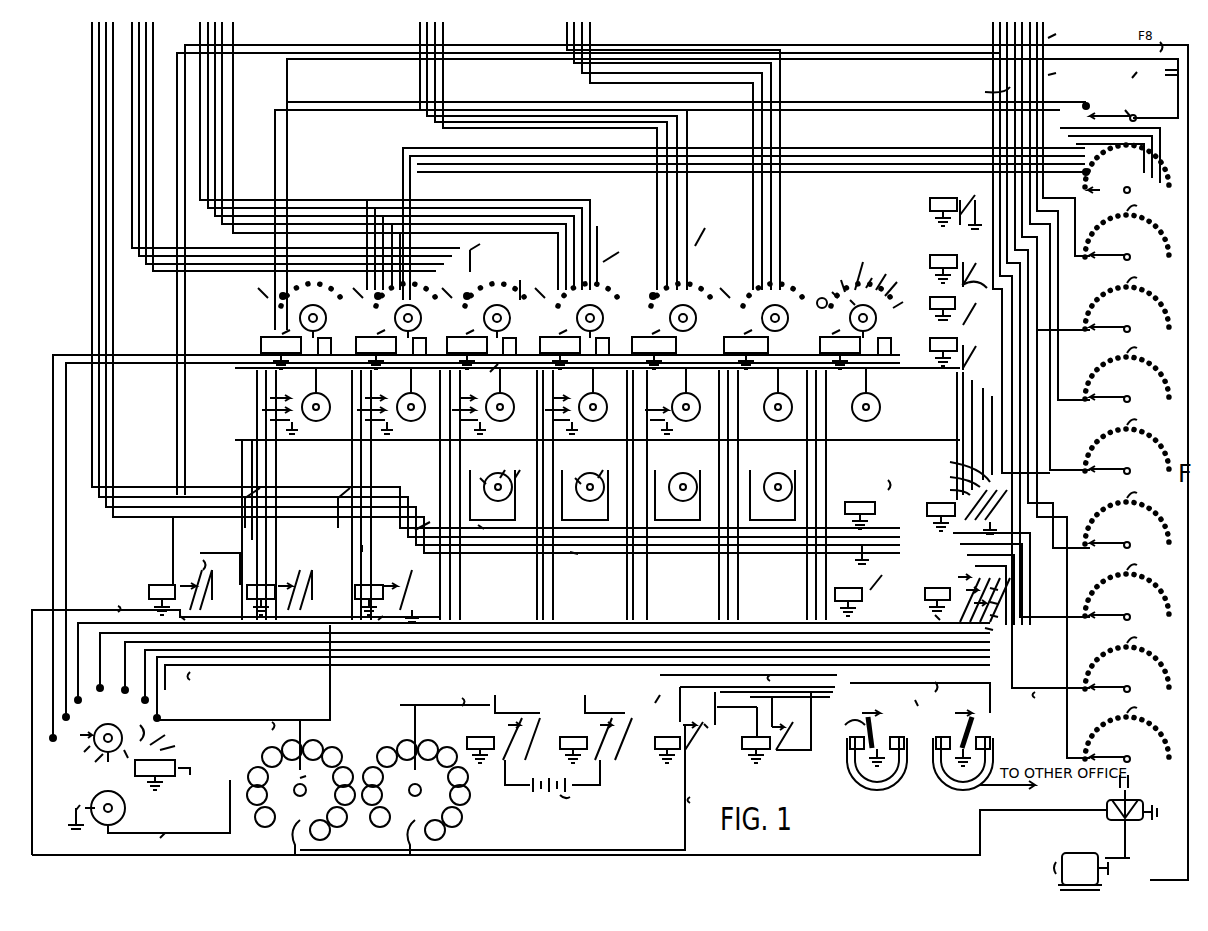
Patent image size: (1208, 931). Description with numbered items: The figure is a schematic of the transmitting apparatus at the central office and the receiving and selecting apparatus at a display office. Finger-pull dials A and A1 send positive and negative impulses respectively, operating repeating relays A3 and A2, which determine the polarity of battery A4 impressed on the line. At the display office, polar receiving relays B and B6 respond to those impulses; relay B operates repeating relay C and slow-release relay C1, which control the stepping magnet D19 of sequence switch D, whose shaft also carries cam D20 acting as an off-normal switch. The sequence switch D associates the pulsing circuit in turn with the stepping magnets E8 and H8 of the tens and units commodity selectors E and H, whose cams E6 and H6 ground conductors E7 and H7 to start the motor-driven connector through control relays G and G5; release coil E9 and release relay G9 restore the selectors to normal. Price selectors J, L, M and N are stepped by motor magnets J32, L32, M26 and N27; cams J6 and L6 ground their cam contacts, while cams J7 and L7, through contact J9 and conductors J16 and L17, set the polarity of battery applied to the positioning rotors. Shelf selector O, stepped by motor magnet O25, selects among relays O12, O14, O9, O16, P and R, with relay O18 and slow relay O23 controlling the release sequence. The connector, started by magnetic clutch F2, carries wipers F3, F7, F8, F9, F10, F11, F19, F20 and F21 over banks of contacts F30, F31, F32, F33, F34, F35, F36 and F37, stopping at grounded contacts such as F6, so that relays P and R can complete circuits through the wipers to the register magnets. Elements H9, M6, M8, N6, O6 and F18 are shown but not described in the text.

The tens commodity selector E is at (292, 307).
The units commodity selector H is at (388, 307).
The fraction price selector J is at (478, 307).
The units price selector L is at (571, 307).
The tens price selector M is at (683, 279).
The hundreds price selector N is at (757, 307).
The shelf selector switch O is at (850, 307).
The stepping magnet E8 is at (281, 353).
The release coil E9 is at (322, 348).
The cam E6 is at (318, 401).
The conductor E7 is at (261, 494).
The stepping magnet H8 is at (376, 353).
The relay H9 is at (417, 348).
The cam H6 is at (413, 401).
The conductor H7 is at (350, 494).
The motor magnet J32 is at (467, 353).
The contact J9 is at (506, 343).
The cam J6 is at (502, 401).
The cam J7 is at (492, 495).
The conductor J16 is at (413, 507).
The motor magnet L32 is at (560, 353).
The cam L6 is at (595, 401).
The cam L7 is at (585, 495).
The conductor L17 is at (580, 550).
The motor magnet M26 is at (654, 353).
The stepping magnet M6 is at (690, 401).
The relay M8 is at (674, 495).
The motor magnet N27 is at (746, 353).
The stepping magnet N6 is at (781, 401).
The motor magnet O25 is at (840, 353).
The stepping magnet O6 is at (870, 401).
The relay O12 is at (952, 210).
The relay O14 is at (953, 271).
The relay O9 is at (953, 311).
The relay O16 is at (953, 354).
The slow relay O23 is at (860, 515).
The relay O18 is at (848, 602).
The relay P is at (967, 512).
The relay R is at (977, 579).
The control relay G is at (162, 566).
The control relay G5 is at (261, 600).
The release relay G9 is at (369, 600).
The sequence switch D is at (105, 731).
The stepping magnet D19 is at (155, 775).
The cam D20 is at (149, 806).
The sending dial A is at (301, 787).
The sending dial A1 is at (416, 780).
The repeating relay A2 is at (480, 750).
The repeating relay A3 is at (573, 750).
The battery A4 is at (552, 781).
The slow-release relay C1 is at (667, 750).
The repeating relay C is at (743, 735).
The polar receiving relay B is at (866, 763).
The polar receiving relay B6 is at (952, 763).
The magnetic clutch F2 is at (1128, 840).
The contact F6 is at (1127, 166).
The bank of contacts F30 is at (1127, 236).
The bank of contacts F31 is at (1127, 308).
The bank of contacts F32 is at (1127, 378).
The bank of contacts F33 is at (1127, 450).
The bank of contacts F34 is at (1127, 523).
The bank of contacts F35 is at (1127, 595).
The bank of contacts F36 is at (1127, 668).
The bank of contacts F37 is at (1127, 738).
The wiper F8 is at (1110, 250).
The wiper F9 is at (1110, 322).
The wiper F10 is at (1110, 392).
The wiper F11 is at (1110, 464).
The wiper F18 is at (1110, 537).
The wiper F19 is at (1110, 609).
The wiper F20 is at (1110, 682).
The wiper F21 is at (1110, 752).
The wiper F3 is at (1113, 109).
The wiper F7 is at (1107, 182).